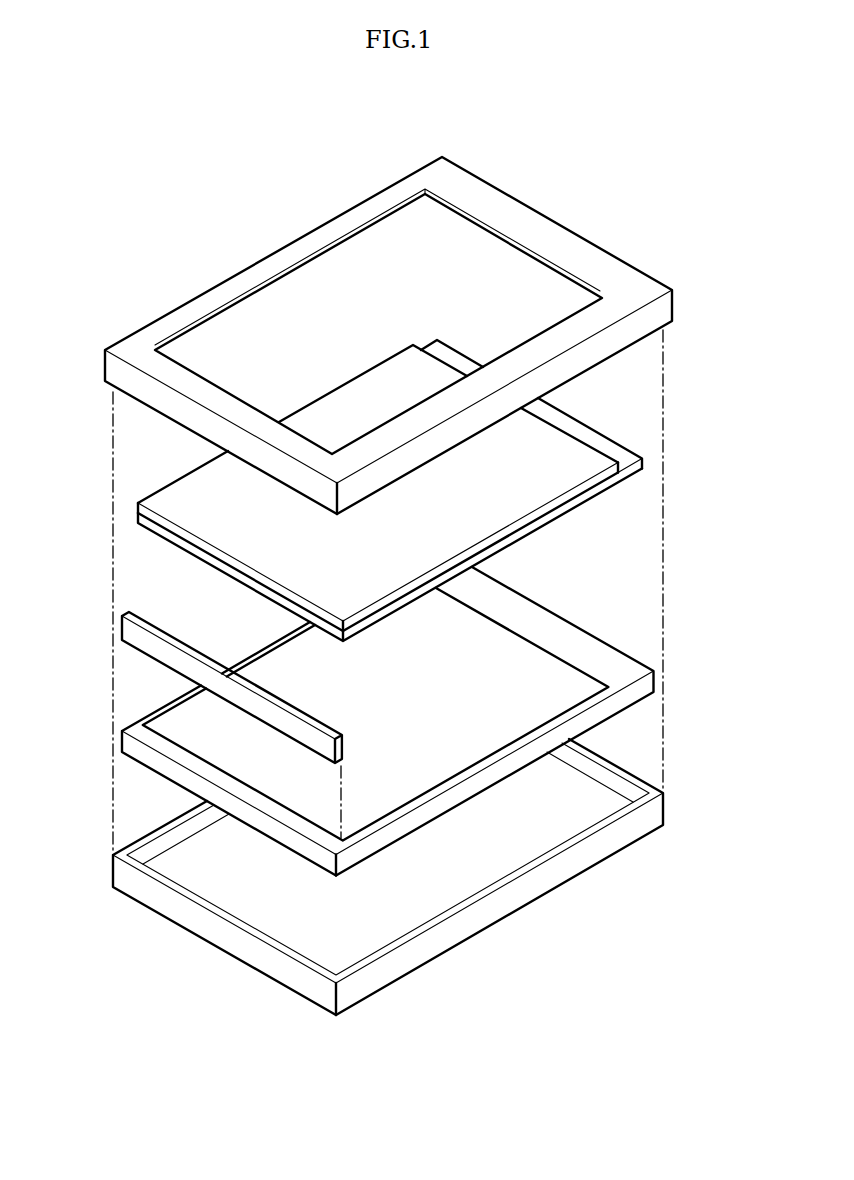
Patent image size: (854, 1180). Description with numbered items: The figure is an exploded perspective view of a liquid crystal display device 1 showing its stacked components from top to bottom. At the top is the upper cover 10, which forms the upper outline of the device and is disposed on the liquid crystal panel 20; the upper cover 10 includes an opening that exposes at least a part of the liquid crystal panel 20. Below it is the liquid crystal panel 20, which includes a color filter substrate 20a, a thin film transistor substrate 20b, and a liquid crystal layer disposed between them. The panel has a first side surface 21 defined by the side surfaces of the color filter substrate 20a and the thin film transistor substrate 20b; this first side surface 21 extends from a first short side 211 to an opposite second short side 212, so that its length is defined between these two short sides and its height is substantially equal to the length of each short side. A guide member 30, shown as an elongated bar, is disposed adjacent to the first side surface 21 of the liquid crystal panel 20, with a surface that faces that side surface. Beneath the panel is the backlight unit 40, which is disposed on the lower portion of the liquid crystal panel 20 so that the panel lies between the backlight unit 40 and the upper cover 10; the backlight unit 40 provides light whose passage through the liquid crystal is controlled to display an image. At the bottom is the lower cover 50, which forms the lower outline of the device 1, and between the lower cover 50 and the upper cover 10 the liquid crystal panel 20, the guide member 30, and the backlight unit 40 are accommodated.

The liquid crystal display device 1 is at (556, 127).
The upper cover 10 is at (672, 309).
The liquid crystal panel 20 is at (733, 430).
The color filter substrate 20a is at (596, 461).
The thin film transistor substrate 20b is at (648, 466).
The first side surface 21 is at (190, 553).
The first short side 211 is at (328, 638).
The second short side 212 is at (138, 516).
The guide member 30 is at (122, 629).
The backlight unit 40 is at (122, 745).
The lower cover 50 is at (118, 874).